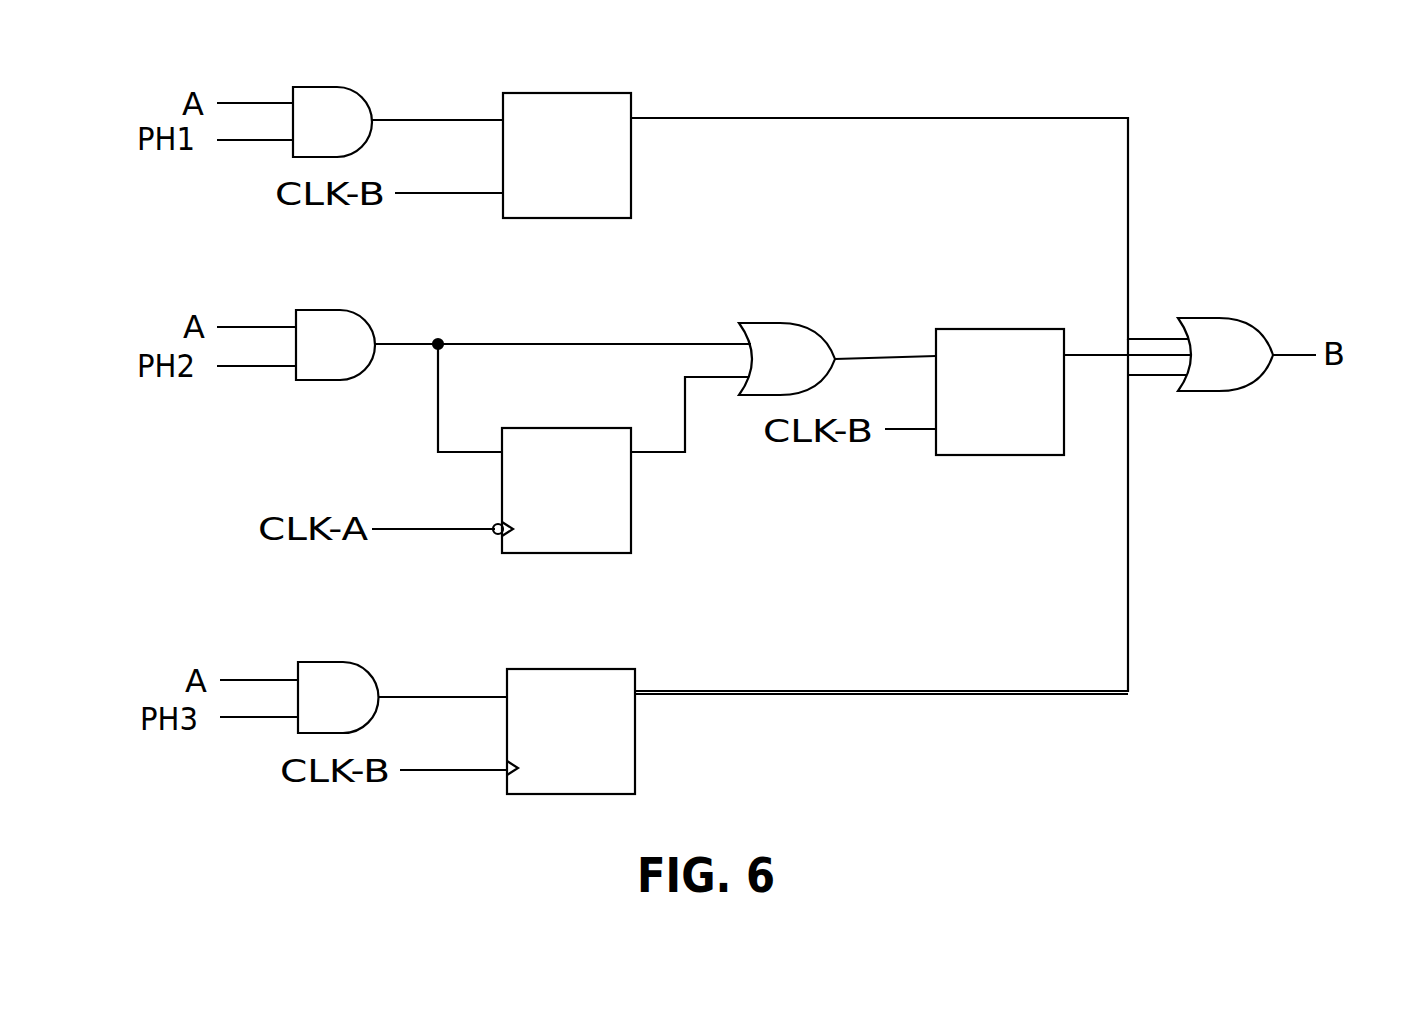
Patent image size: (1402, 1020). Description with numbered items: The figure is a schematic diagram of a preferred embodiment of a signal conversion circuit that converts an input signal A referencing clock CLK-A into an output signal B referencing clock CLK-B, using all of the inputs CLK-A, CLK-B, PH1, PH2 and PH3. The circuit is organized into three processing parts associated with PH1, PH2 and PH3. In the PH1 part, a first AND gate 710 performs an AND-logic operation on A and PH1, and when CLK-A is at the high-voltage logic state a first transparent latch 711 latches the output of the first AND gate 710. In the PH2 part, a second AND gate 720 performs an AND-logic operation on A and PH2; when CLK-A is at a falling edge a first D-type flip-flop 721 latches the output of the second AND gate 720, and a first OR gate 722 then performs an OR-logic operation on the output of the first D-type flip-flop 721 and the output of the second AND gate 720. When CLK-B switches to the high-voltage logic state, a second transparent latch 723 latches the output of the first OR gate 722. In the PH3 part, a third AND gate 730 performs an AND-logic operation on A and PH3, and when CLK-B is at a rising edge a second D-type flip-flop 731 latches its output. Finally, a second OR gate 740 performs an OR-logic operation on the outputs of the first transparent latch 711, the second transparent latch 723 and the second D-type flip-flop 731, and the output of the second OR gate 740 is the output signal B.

The first AND gate 710 is at (325, 87).
The first transparent latch 711 is at (550, 93).
The second AND gate 720 is at (328, 310).
The first D-type flip-flop 721 is at (552, 428).
The first OR gate 722 is at (775, 323).
The second transparent latch 723 is at (985, 329).
The third AND gate 730 is at (328, 662).
The second D-type flip-flop 731 is at (556, 669).
The second OR gate 740 is at (1215, 318).